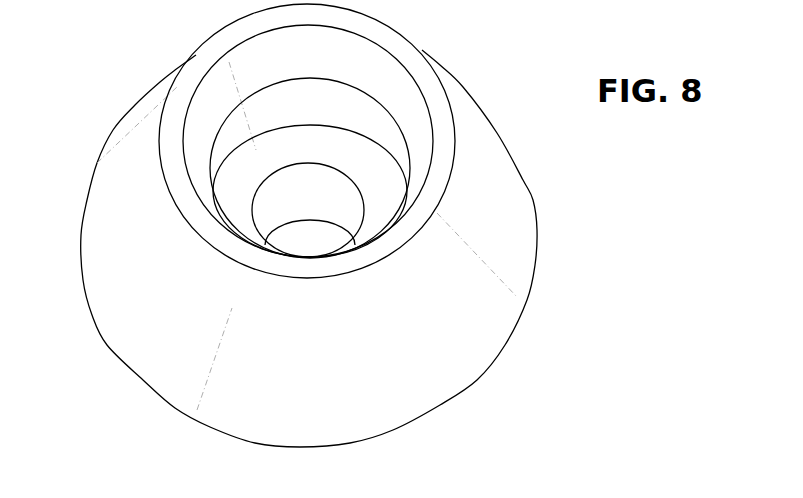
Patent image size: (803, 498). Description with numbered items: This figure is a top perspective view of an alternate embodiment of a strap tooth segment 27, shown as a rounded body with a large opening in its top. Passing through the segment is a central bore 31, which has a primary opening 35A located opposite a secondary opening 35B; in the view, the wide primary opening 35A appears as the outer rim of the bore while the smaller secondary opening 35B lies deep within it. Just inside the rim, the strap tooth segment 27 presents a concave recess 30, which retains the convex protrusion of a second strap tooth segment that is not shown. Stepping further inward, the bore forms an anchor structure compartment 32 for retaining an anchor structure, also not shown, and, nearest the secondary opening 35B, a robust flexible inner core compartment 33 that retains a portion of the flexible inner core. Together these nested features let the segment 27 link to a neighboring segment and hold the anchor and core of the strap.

The strap tooth segment 27 is at (538, 204).
The primary opening 35A is at (256, 37).
The concave recess 30 is at (263, 72).
The anchor structure compartment 32 is at (297, 105).
The central bore 31 is at (307, 163).
The flexible inner core compartment 33 is at (305, 208).
The secondary opening 35B is at (302, 241).